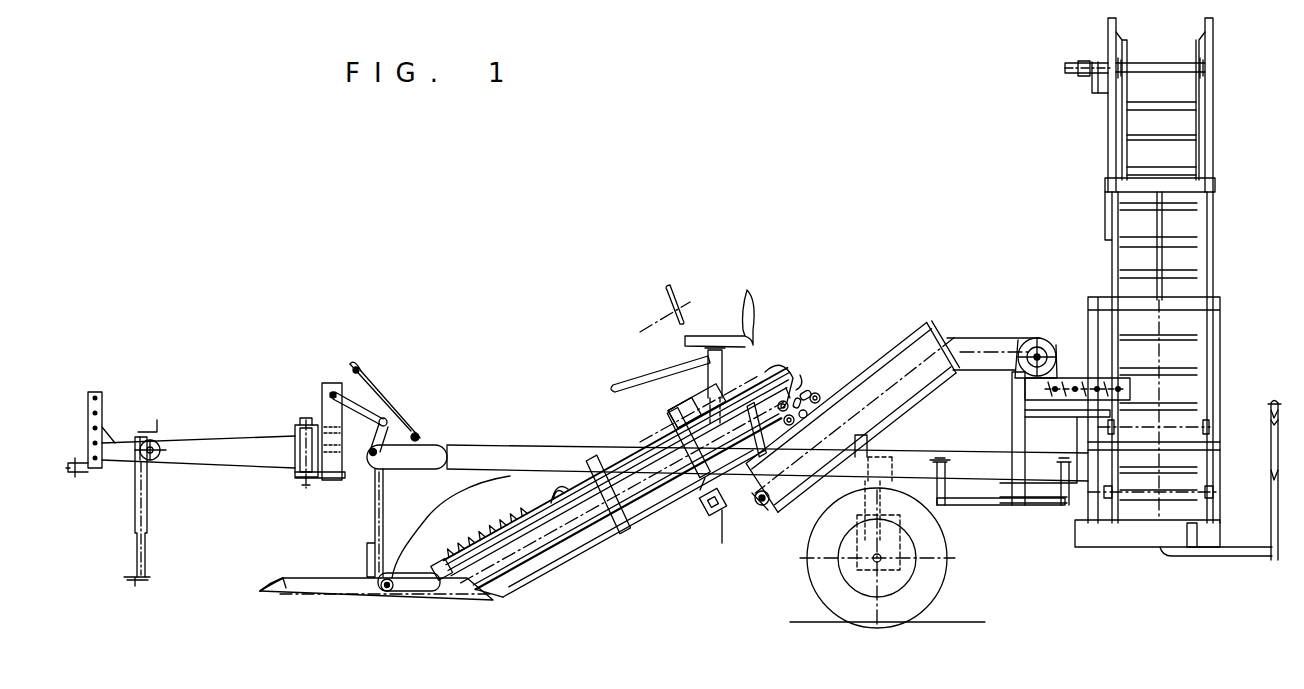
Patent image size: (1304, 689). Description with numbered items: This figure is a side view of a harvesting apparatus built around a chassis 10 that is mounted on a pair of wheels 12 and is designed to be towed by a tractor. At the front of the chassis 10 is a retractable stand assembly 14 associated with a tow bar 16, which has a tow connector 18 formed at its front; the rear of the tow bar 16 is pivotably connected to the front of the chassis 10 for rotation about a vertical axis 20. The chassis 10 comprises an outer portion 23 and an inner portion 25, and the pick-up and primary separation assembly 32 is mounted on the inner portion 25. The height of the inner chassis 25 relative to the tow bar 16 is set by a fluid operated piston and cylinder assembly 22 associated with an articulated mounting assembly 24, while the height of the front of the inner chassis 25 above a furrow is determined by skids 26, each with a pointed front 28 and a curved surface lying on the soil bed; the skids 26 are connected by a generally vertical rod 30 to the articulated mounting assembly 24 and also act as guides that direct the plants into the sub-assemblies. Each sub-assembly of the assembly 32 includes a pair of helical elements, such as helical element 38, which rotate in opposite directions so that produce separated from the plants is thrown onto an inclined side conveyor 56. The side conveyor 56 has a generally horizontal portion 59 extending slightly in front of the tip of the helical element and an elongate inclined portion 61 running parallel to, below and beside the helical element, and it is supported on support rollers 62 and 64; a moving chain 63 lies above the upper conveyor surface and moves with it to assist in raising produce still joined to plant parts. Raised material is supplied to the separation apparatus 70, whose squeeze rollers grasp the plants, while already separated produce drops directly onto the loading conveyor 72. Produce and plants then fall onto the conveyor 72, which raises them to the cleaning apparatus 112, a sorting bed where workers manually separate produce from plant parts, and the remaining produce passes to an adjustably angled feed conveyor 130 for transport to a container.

The chassis 10 is at (498, 453).
The wheels 12 is at (937, 555).
The retractable stand assembly 14 is at (160, 500).
The tow bar 16 is at (193, 448).
The tow connector 18 is at (101, 400).
The vertical axis 20 is at (302, 442).
The fluid operated piston and cylinder assembly 22 is at (393, 430).
The outer portion 23 is at (456, 453).
The articulated mounting assembly 24 is at (357, 407).
The inner portion 25 is at (412, 455).
The skids 26 is at (332, 590).
The pointed front 28 is at (268, 590).
The vertical rod 30 is at (380, 513).
The pick-up and primary separation assembly 32 is at (577, 425).
The helical element 38 is at (465, 552).
The inclined side conveyor 56 is at (530, 577).
The generally horizontal portion 59 is at (408, 583).
The elongate inclined portion 61 is at (573, 550).
The support roller 62 is at (380, 593).
The moving chain 63 is at (737, 395).
The support roller 64 is at (722, 520).
The separation apparatus 70 is at (826, 370).
The loading conveyor 72 is at (898, 365).
The cleaning apparatus 112 is at (1037, 345).
The adjustably angled feed conveyor 130 is at (1199, 142).